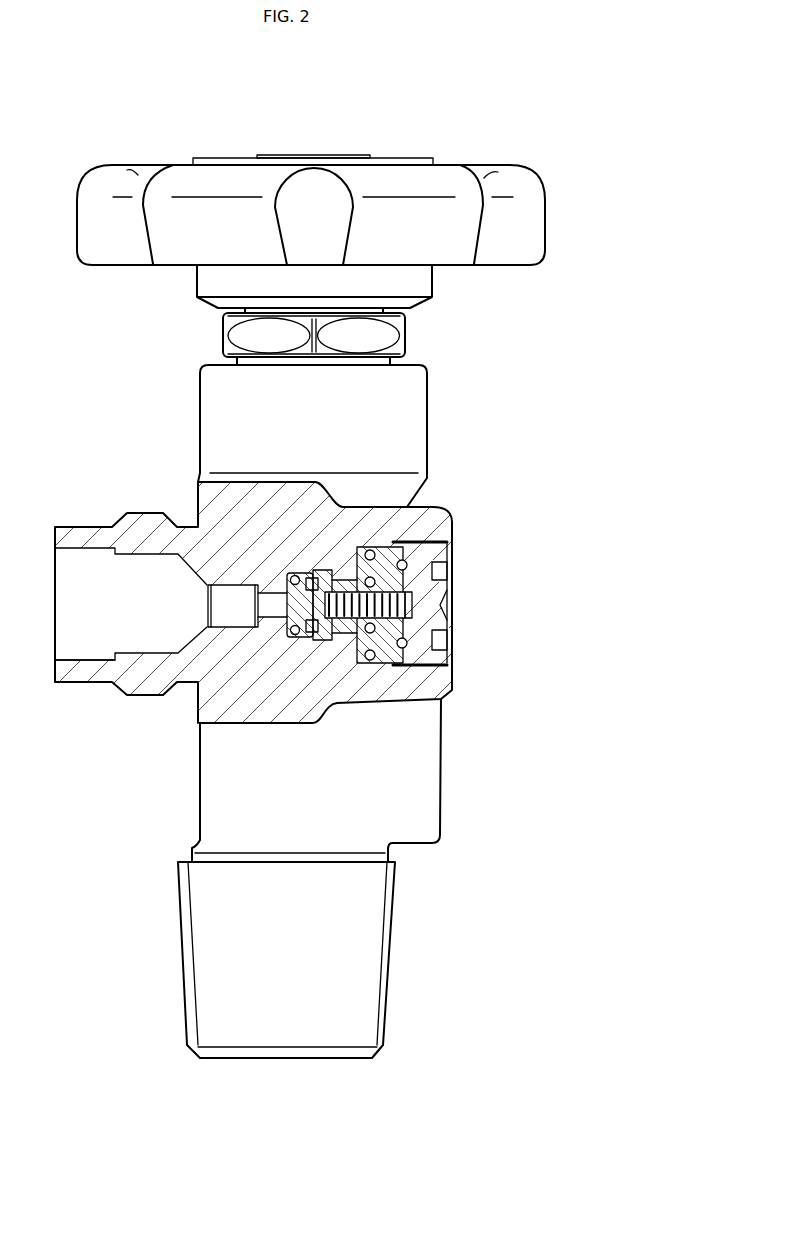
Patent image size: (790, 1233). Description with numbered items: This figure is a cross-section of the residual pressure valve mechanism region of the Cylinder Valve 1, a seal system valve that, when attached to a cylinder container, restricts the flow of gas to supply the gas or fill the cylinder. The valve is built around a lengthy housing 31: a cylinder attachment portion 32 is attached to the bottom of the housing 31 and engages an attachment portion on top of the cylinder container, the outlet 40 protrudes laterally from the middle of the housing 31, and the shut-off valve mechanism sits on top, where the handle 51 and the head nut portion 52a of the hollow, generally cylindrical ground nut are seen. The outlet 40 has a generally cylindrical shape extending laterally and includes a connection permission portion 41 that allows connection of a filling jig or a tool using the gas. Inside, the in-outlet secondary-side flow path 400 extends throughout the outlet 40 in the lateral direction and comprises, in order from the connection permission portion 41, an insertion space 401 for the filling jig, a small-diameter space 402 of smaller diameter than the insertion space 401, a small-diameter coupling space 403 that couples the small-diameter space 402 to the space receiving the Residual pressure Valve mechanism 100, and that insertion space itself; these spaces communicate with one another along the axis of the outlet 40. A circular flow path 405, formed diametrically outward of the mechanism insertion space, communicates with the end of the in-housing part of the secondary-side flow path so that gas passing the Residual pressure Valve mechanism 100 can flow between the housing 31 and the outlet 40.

The Cylinder Valve 1 is at (540, 150).
The handle 51 is at (545, 225).
The head nut portion 52a is at (405, 333).
The housing 31 is at (427, 427).
The cylinder attachment portion 32 is at (360, 962).
The outlet 40 is at (434, 504).
The connection permission portion 41 is at (110, 532).
The Residual pressure Valve mechanism 100 is at (382, 540).
The in-outlet secondary-side flow path 400 is at (135, 598).
The insertion space 401 is at (94, 637).
The small-diameter space 402 is at (233, 606).
The small-diameter coupling space 403 is at (275, 612).
The circular flow path 405 is at (320, 640).